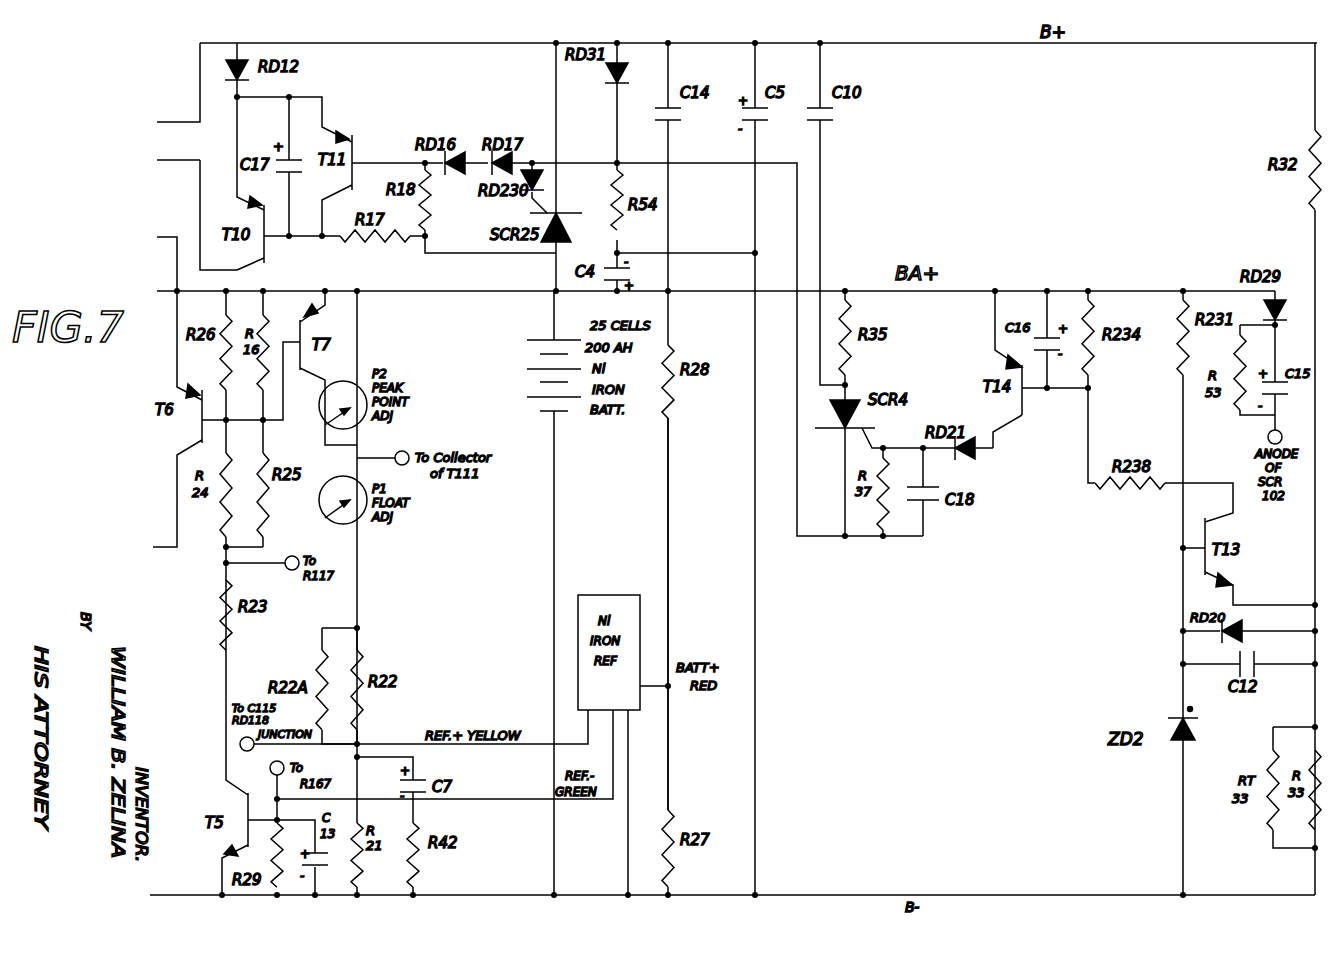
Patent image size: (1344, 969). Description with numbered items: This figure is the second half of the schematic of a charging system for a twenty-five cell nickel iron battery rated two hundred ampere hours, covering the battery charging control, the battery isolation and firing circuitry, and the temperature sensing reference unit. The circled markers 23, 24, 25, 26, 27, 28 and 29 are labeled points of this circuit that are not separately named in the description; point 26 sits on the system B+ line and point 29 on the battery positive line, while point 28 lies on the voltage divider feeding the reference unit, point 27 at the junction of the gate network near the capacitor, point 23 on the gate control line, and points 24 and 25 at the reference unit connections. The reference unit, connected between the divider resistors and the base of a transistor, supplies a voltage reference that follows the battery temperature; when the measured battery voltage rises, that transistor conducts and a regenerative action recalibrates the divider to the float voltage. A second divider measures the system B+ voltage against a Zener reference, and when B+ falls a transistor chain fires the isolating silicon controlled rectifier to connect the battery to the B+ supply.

The gate control line junction 23 is at (532, 160).
The reference minus line 24 is at (272, 792).
The reference plus line 25 is at (362, 738).
The B+ supply bus 26 is at (1152, 43).
The R54 C4 junction line 27 is at (630, 252).
The R28 lead 28 is at (666, 500).
The battery positive bus BA+ 29 is at (1010, 285).